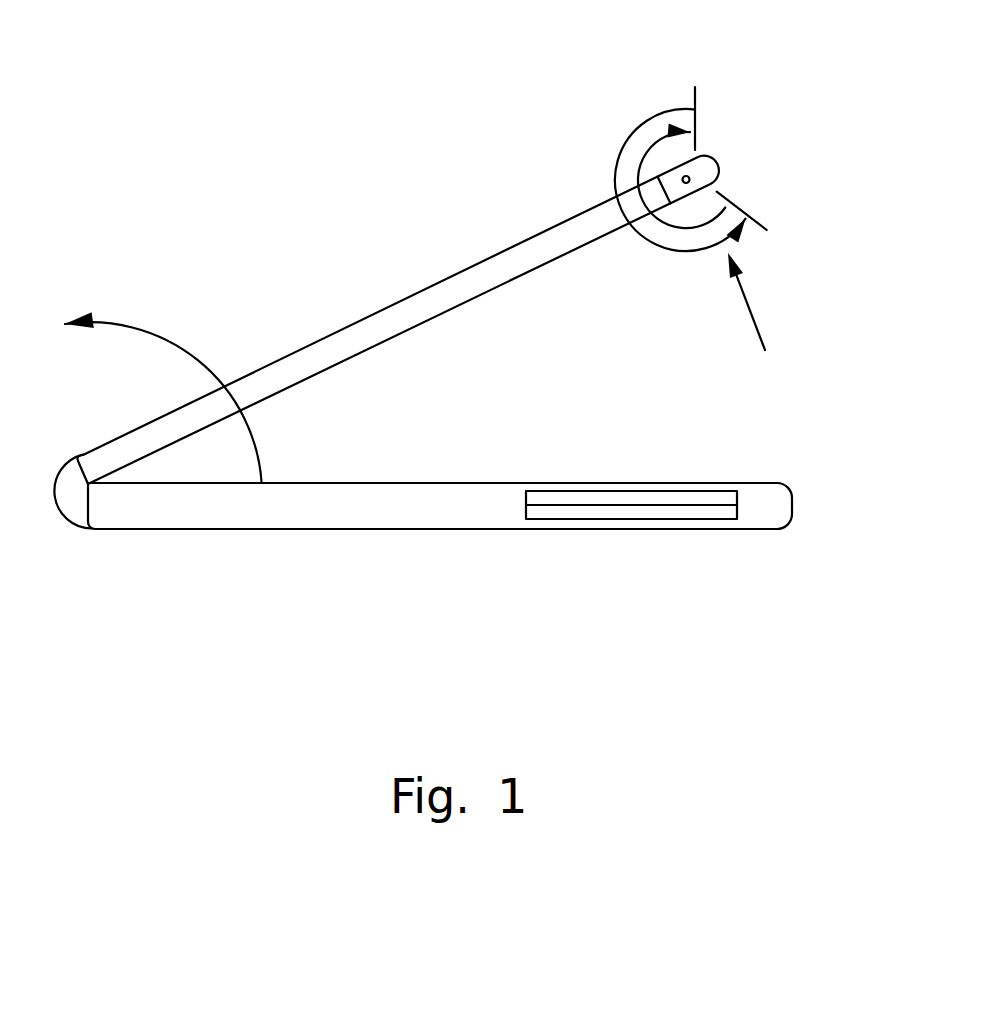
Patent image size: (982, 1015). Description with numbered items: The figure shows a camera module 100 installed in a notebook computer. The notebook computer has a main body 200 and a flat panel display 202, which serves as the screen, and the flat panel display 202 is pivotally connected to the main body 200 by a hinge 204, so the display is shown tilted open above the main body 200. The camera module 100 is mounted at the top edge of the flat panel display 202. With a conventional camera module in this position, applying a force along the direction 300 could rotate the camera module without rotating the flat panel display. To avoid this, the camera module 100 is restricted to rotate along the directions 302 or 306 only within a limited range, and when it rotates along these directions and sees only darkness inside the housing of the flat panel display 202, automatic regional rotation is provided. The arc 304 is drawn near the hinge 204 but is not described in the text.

The camera module 100 is at (683, 165).
The main body 200 is at (354, 512).
The flat panel display 202 is at (434, 302).
The hinge 204 is at (67, 500).
The direction 300 is at (772, 311).
The direction 302 is at (681, 228).
The opening rotation direction 304 is at (158, 337).
The direction 306 is at (668, 110).